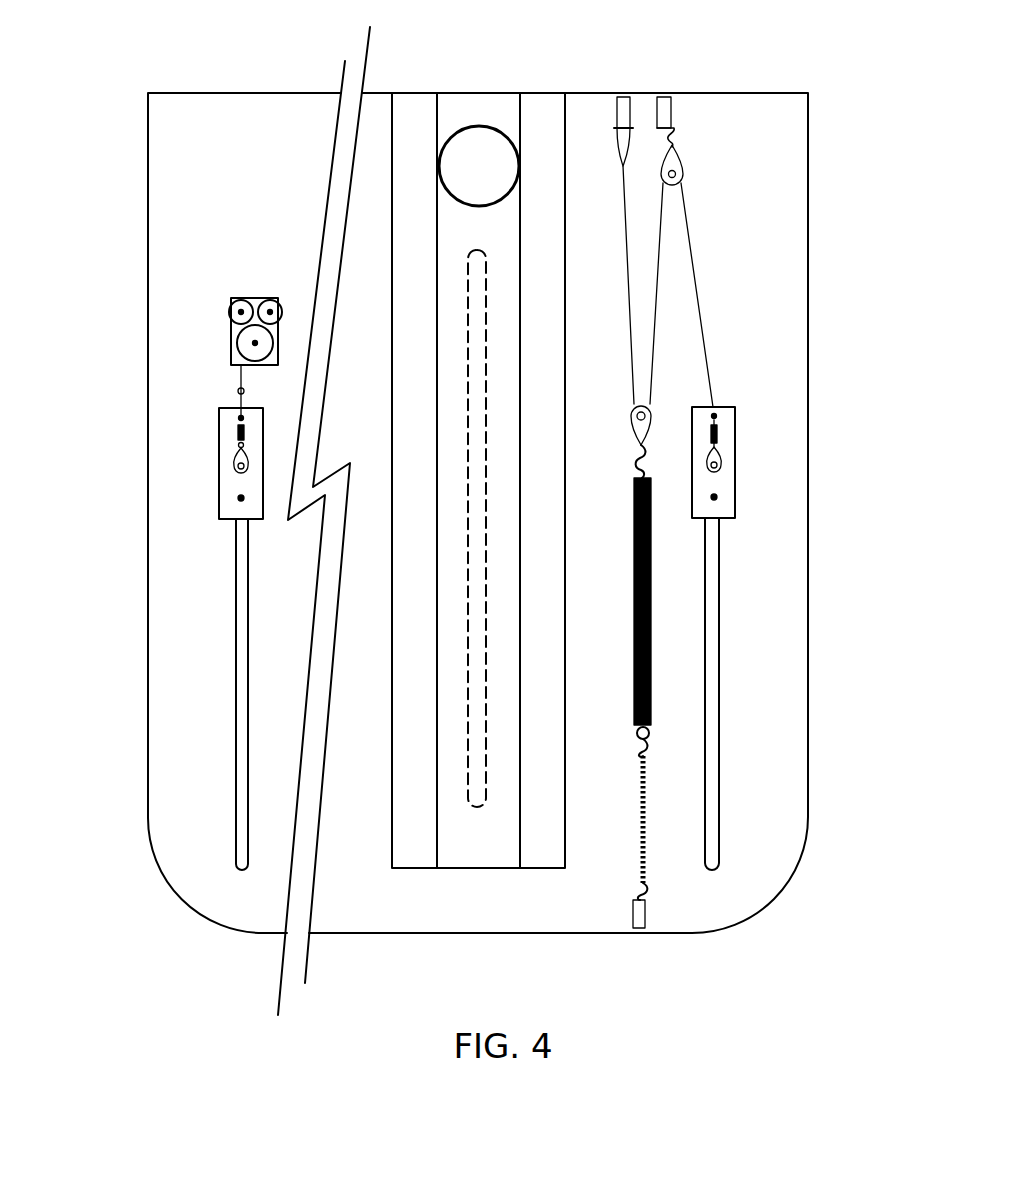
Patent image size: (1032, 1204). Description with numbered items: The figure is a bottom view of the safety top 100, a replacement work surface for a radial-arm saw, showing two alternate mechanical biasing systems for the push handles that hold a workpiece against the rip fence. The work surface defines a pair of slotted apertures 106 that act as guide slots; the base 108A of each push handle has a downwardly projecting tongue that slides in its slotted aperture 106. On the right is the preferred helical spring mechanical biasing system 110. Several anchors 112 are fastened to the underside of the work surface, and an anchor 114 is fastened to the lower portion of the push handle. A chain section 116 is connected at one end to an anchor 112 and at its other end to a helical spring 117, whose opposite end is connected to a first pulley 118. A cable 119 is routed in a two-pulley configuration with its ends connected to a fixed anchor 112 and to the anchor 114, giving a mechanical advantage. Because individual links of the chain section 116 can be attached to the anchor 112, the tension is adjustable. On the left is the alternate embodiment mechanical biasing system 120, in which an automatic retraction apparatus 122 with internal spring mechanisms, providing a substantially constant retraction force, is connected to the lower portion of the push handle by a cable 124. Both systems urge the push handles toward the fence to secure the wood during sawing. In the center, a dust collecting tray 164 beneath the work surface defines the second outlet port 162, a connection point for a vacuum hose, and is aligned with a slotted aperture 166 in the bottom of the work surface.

The safety top 100 is at (122, 245).
The slotted aperture 106 is at (240, 845).
The base 108A is at (227, 487).
The helical spring mechanical biasing system 110 is at (677, 499).
The anchor 112 is at (665, 97).
The anchor 114 is at (722, 453).
The chain section 116 is at (638, 843).
The helical spring 117 is at (633, 648).
The first pulley 118 is at (676, 162).
The cable 119 is at (698, 283).
The alternate embodiment mechanical biasing system 120 is at (172, 370).
The automatic retraction apparatus 122 is at (230, 318).
The cable 124 is at (237, 390).
The second outlet port 162 is at (480, 126).
The dust collecting tray 164 is at (407, 843).
The slotted aperture 166 is at (474, 800).